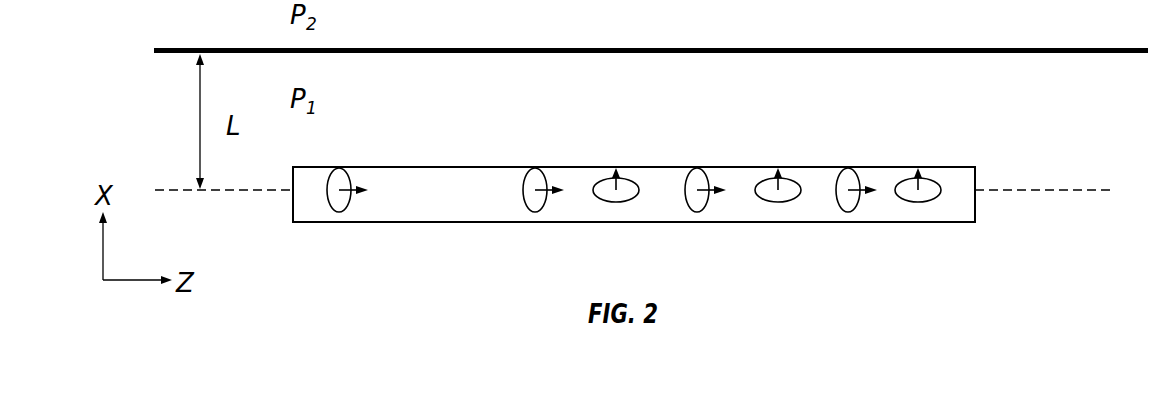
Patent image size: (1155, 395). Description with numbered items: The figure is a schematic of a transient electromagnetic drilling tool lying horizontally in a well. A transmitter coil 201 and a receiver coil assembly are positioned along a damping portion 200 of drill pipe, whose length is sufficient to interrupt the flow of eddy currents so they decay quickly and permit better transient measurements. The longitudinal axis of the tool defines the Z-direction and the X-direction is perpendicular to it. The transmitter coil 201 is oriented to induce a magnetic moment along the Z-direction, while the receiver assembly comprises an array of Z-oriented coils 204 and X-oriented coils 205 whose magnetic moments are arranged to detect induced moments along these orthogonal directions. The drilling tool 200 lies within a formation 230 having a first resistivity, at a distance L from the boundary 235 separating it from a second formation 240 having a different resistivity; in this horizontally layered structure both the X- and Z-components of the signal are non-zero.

The damping portion of drill pipe 200 is at (304, 216).
The transmitter coil 201 is at (340, 213).
The Z-oriented coils 204 is at (535, 213).
The X-oriented coils 205 is at (614, 203).
The formation 230 is at (749, 112).
The interface between media 235 is at (588, 54).
The formation 240 is at (749, 30).